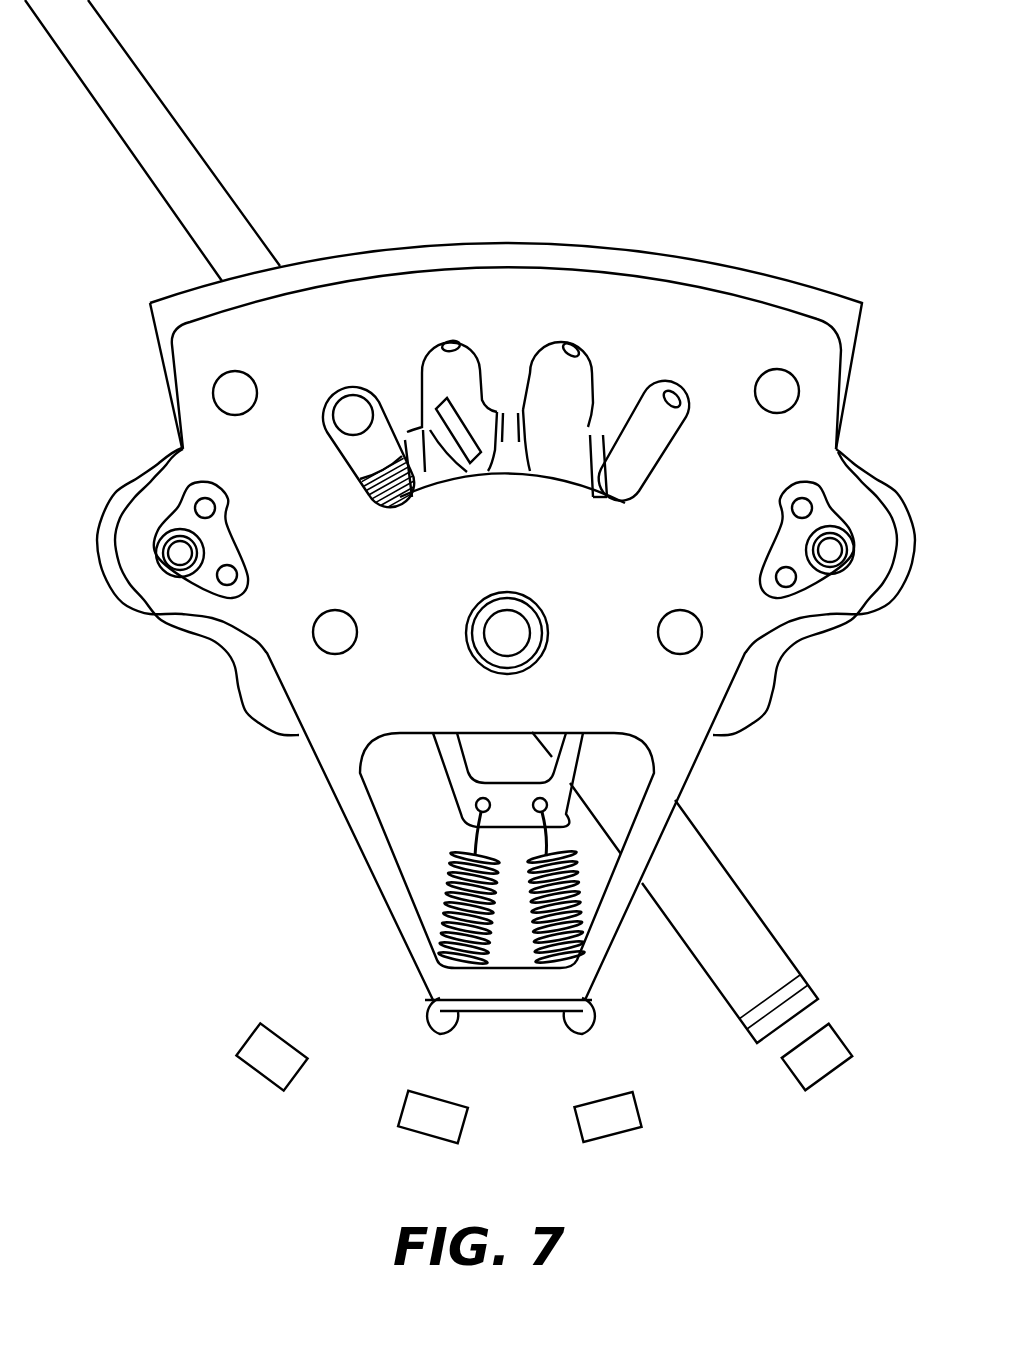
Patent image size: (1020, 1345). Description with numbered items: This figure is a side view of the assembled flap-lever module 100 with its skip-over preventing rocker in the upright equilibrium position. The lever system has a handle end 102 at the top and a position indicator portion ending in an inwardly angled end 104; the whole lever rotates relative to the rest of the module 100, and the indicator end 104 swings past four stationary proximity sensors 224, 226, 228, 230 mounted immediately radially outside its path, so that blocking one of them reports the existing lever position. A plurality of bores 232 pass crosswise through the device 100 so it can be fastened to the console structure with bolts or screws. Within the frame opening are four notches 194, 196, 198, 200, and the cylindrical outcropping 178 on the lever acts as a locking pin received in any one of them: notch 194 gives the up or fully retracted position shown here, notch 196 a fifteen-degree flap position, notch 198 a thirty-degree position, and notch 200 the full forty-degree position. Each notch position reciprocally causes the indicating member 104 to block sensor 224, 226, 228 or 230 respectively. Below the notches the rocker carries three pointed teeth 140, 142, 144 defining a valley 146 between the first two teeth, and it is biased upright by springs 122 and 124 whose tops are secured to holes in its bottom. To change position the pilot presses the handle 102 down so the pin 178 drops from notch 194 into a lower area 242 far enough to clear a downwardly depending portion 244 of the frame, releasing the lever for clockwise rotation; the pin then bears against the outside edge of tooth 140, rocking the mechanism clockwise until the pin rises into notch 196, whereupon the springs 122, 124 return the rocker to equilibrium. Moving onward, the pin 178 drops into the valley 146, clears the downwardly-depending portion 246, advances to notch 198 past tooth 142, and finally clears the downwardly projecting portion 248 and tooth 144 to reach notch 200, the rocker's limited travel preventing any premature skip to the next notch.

The module 100 is at (528, 178).
The handle end 102 is at (157, 90).
The inwardly angled end 104 is at (793, 990).
The spring 122 is at (440, 900).
The spring 124 is at (576, 922).
The tooth 140 is at (420, 437).
The tooth 142 is at (499, 411).
The tooth 144 is at (609, 412).
The valley 146 is at (481, 467).
The cylindrical outcropping 178 is at (352, 413).
The notch 194 is at (347, 393).
The notch 196 is at (458, 345).
The notch 198 is at (567, 351).
The notch 200 is at (688, 404).
The proximity sensor 224 is at (830, 1080).
The proximity sensor 226 is at (620, 1133).
The proximity sensor 228 is at (423, 1140).
The proximity sensor 230 is at (257, 1083).
The bores 232 is at (234, 396).
The lower area 242 is at (378, 507).
The downwardly depending portion 244 is at (414, 498).
The downwardly-depending portion 246 is at (510, 474).
The downwardly projecting portion 248 is at (600, 498).